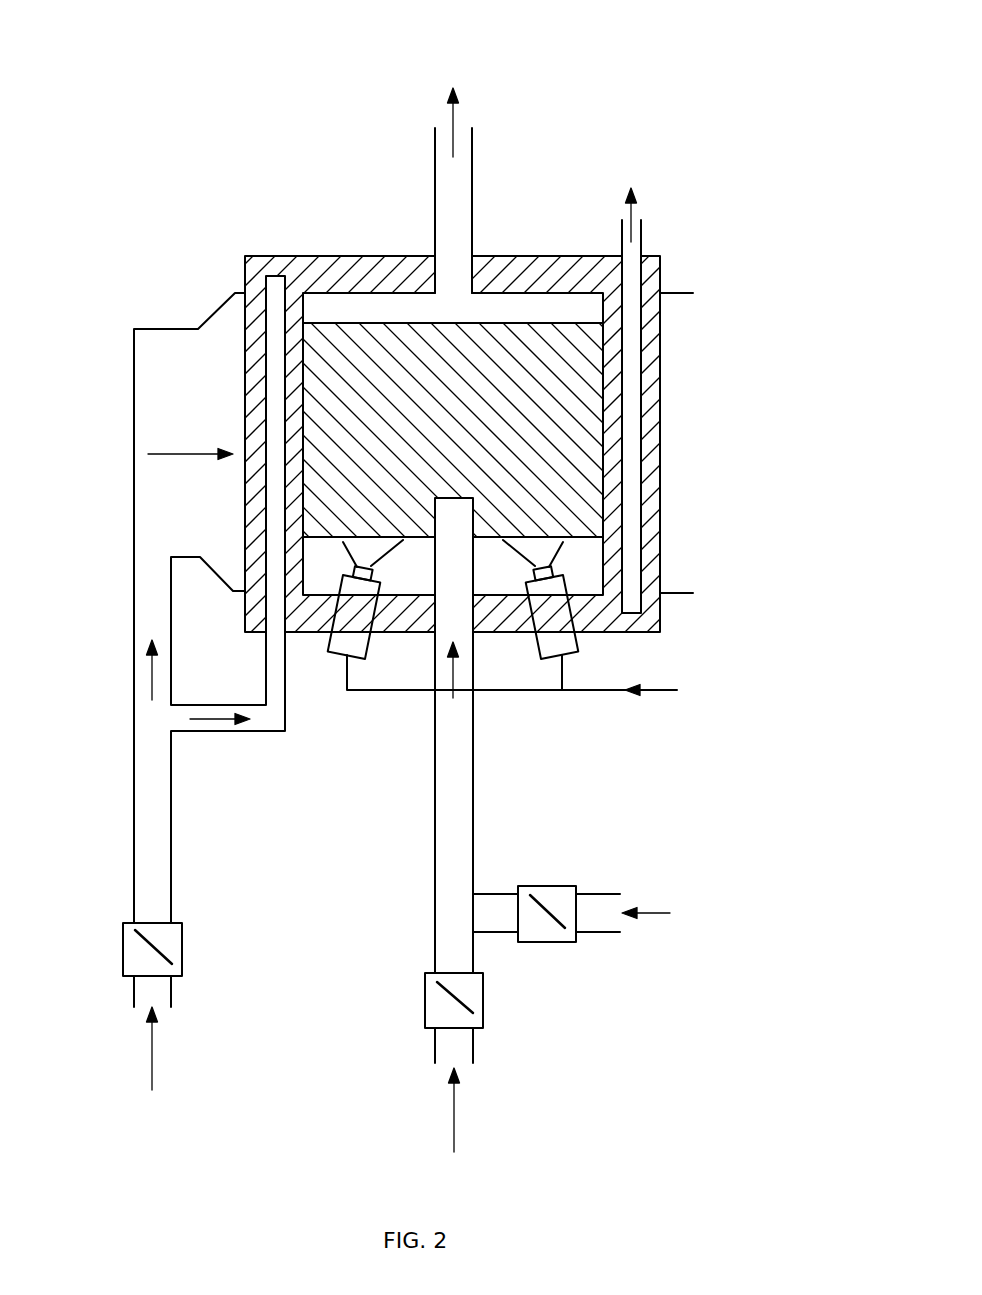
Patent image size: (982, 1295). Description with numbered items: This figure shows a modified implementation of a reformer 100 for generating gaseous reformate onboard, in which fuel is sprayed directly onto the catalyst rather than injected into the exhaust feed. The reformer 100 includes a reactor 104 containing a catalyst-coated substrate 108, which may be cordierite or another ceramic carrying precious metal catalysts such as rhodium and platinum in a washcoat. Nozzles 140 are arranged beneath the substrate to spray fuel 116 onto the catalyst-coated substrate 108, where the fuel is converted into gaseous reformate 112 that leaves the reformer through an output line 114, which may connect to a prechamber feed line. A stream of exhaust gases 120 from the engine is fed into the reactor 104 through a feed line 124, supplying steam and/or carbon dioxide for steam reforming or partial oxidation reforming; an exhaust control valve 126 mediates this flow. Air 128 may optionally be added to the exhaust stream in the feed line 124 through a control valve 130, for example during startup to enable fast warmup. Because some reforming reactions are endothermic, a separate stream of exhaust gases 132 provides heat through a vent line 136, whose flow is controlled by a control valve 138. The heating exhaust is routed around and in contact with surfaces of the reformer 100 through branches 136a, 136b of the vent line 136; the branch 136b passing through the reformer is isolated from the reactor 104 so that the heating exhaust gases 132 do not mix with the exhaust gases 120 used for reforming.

The reformer 100 is at (396, 73).
The reactor 104 is at (605, 448).
The catalyst-coated substrate 108 is at (577, 385).
The gaseous reformate 112 is at (461, 108).
The output line 114 is at (435, 205).
The fuel 116 is at (534, 679).
The exhaust gases 120 is at (457, 1125).
The feed line 124 is at (434, 843).
The exhaust control valve 126 is at (425, 1000).
The air 128 is at (651, 913).
The control valve 130 is at (552, 885).
The exhaust gases 132 is at (154, 1064).
The vent line 136 is at (134, 803).
The vent line branch 136a is at (141, 466).
The vent line branch 136b is at (260, 720).
The control valve 138 is at (123, 950).
The nozzles 140 is at (347, 657).